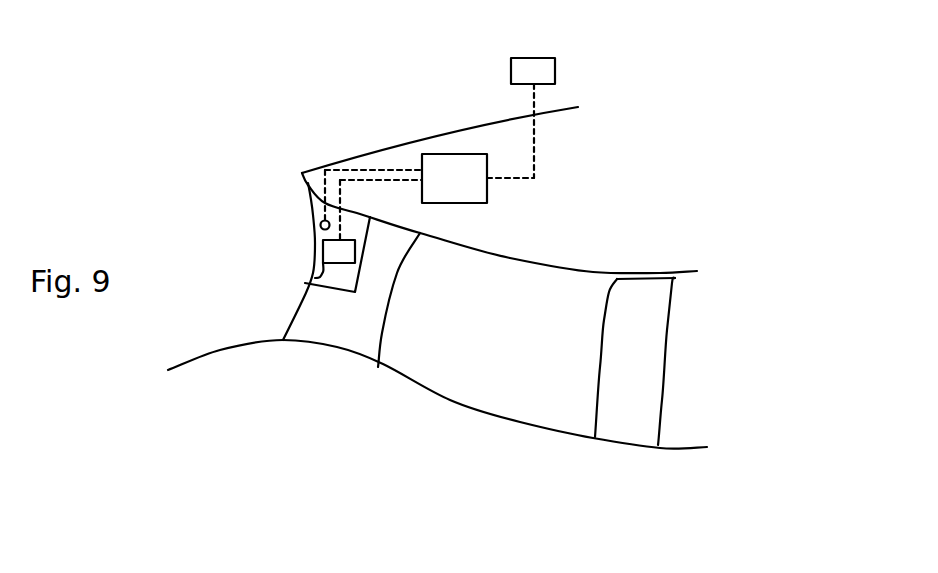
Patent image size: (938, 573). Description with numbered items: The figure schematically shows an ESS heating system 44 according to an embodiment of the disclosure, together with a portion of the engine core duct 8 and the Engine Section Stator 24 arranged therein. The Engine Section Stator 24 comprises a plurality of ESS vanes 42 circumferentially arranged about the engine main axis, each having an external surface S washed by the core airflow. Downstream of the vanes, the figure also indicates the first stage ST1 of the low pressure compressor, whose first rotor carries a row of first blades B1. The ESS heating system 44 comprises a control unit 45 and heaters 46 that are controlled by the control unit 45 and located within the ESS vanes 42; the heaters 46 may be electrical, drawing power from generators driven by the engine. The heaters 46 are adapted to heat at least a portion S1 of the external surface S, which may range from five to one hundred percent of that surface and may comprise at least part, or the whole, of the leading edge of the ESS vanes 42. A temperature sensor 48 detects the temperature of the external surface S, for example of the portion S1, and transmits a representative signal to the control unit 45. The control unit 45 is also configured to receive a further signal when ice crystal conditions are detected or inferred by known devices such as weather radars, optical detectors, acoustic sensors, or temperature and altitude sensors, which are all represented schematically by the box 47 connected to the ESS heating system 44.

The engine core duct 8 is at (527, 226).
The Engine Section Stator 24 is at (280, 235).
The ESS vanes 42 is at (362, 342).
The ESS heating system 44 is at (350, 130).
The control unit 45 is at (447, 154).
The heaters 46 is at (315, 278).
The box 47 is at (557, 73).
The temperature sensor 48 is at (322, 220).
The first blades B1 is at (635, 362).
The first stage ST1 is at (653, 237).
The external surface S is at (315, 334).
The portion of the external surface S1 is at (337, 292).